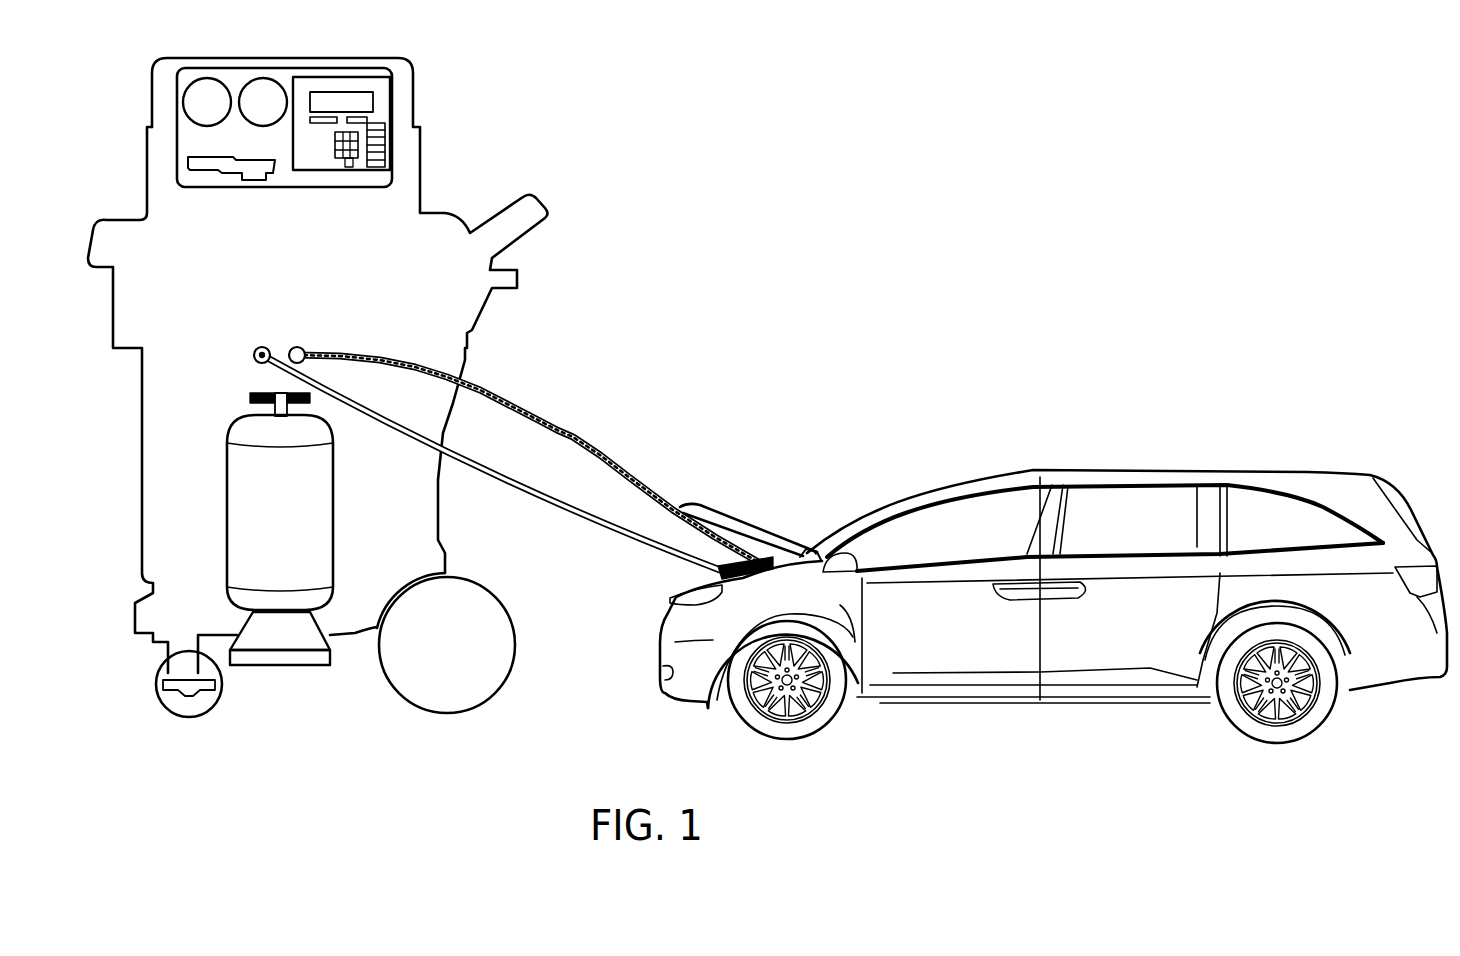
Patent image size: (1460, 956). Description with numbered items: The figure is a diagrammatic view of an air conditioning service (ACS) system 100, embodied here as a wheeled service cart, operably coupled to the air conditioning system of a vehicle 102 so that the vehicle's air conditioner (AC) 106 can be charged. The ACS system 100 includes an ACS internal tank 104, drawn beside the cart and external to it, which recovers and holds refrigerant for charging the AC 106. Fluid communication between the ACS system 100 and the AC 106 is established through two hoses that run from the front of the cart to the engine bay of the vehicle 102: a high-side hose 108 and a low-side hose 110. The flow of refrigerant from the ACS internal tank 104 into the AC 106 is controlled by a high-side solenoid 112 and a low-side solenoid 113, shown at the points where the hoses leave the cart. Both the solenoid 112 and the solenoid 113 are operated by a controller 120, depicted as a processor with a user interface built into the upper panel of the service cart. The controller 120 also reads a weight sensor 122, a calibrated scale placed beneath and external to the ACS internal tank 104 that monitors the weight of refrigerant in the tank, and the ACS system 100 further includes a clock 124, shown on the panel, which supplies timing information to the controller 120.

The air conditioning service (ACS) system 100 is at (530, 215).
The vehicle 102 is at (1040, 467).
The ACS internal tank 104 is at (260, 529).
The air conditioner (AC) 106 is at (770, 562).
The high-side hose 108 is at (557, 522).
The low-side hose 110 is at (577, 437).
The high-side solenoid 112 is at (238, 347).
The low-side solenoid 113 is at (305, 339).
The controller 120 is at (388, 97).
The weight sensor 122 is at (260, 645).
The clock 124 is at (190, 100).